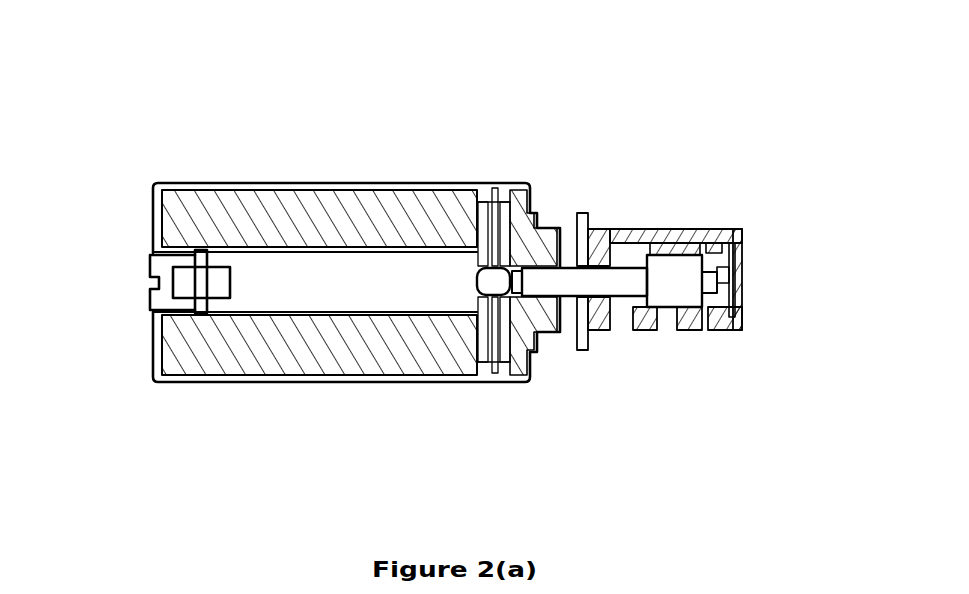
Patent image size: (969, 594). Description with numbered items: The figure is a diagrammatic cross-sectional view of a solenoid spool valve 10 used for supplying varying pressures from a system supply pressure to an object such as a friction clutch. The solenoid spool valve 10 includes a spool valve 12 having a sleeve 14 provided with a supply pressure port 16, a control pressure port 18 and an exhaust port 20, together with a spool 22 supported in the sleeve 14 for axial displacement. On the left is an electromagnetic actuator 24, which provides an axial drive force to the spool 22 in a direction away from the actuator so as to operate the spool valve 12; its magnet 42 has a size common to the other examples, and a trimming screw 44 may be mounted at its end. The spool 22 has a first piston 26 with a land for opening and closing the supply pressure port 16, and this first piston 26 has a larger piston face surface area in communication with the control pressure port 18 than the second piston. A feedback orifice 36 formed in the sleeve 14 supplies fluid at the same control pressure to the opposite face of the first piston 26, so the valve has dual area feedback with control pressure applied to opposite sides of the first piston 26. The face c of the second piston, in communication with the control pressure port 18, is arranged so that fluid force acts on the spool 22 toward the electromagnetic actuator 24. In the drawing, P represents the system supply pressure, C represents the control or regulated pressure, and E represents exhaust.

The solenoid spool valve 10 is at (397, 160).
The spool valve 12 is at (638, 184).
The sleeve 14 is at (595, 227).
The supply pressure port 16 is at (670, 318).
The control pressure port 18 is at (608, 347).
The exhaust port 20 is at (573, 227).
The spool 22 is at (733, 277).
The electromagnetic actuator 24 is at (265, 181).
The first piston 26 is at (678, 232).
The feedback orifice 36 is at (707, 330).
The magnet 42 is at (155, 200).
The trimming screw 44 is at (147, 272).
The exhaust E is at (570, 235).
The control (regulated) pressure C is at (703, 303).
The face of the second piston c is at (620, 320).
The system supply pressure P is at (663, 318).